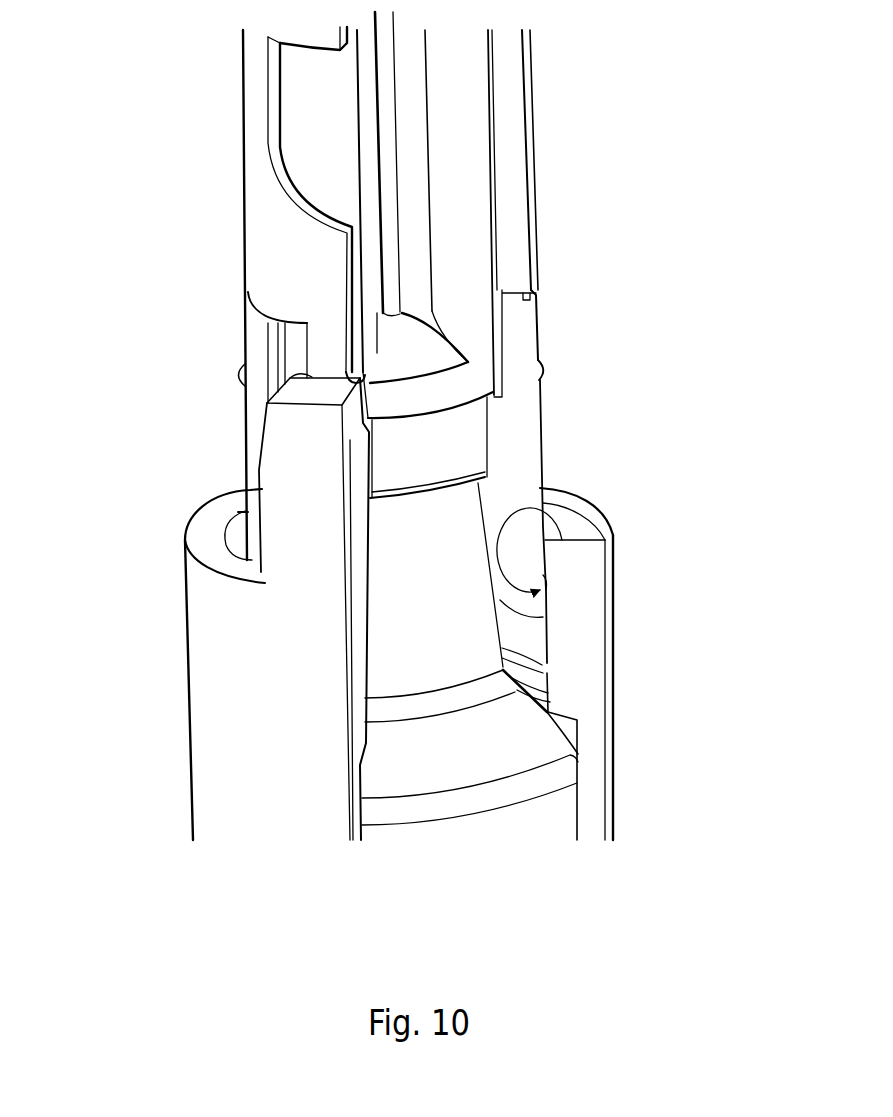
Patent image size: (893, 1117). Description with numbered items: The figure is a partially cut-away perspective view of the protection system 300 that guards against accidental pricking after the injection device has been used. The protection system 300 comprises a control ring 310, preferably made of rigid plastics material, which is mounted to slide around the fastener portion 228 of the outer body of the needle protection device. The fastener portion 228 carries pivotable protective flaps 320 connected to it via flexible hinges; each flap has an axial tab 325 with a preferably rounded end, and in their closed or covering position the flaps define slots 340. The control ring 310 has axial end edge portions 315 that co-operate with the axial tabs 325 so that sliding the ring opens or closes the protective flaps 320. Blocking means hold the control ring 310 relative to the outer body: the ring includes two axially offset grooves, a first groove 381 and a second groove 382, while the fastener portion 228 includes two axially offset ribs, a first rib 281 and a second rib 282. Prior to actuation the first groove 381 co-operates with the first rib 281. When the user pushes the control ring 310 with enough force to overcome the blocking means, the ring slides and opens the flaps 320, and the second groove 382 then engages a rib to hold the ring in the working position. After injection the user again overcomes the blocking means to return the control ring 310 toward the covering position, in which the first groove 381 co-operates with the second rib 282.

The protection system 300 is at (184, 690).
The control ring 310 is at (213, 618).
The axial end edge portion 315 is at (320, 397).
The protective flap 320 is at (252, 172).
The axial tab 325 is at (331, 376).
The slot 340 is at (305, 97).
The fastener portion 228 is at (513, 458).
The first rib 281 is at (560, 502).
The second rib 282 is at (533, 378).
The first groove 381 is at (556, 580).
The second groove 382 is at (553, 690).